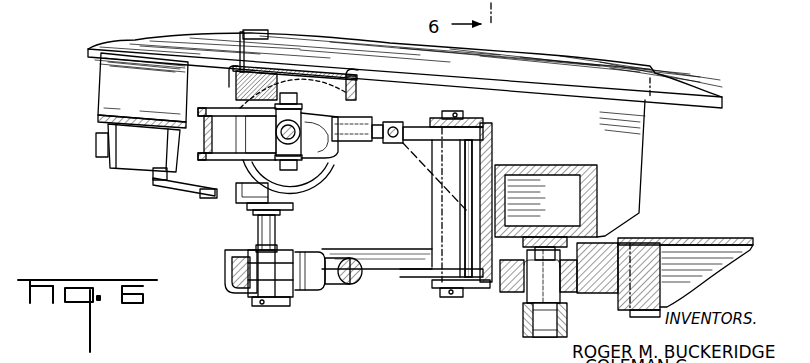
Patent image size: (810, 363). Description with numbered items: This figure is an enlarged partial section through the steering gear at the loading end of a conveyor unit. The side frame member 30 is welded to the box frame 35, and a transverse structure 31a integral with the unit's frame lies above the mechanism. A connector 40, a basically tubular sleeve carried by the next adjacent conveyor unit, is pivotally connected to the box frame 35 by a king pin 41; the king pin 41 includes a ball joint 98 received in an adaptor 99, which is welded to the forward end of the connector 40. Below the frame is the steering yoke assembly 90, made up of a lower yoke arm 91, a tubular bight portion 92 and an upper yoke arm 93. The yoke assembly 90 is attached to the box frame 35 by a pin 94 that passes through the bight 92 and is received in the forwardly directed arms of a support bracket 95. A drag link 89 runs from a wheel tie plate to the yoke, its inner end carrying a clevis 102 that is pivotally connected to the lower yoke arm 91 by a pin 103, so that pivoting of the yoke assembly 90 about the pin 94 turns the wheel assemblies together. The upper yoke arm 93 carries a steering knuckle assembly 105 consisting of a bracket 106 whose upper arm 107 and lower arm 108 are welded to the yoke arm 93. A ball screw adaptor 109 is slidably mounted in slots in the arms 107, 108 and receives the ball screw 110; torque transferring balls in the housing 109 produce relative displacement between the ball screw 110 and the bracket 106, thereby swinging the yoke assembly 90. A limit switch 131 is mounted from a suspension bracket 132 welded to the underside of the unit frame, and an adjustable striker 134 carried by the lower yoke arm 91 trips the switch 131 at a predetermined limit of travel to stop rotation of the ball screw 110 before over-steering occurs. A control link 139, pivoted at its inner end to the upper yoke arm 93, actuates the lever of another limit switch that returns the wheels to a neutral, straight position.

The side frame member 30 is at (683, 92).
The transverse structure 31a is at (336, 72).
The box frame 35 is at (567, 167).
The connector 40 is at (706, 238).
The king pin 41 is at (560, 250).
The drag link 89 is at (348, 282).
The steering yoke assembly 90 is at (371, 233).
The lower yoke arm 91 is at (418, 273).
The tubular bight portion 92 is at (472, 163).
The upper yoke arm 93 is at (422, 132).
The pin 94 is at (462, 113).
The support bracket 95 is at (493, 133).
The ball joint 98 is at (570, 290).
The adaptor 99 is at (507, 290).
The clevis 102 is at (282, 293).
The pin 103 is at (257, 298).
The steering knuckle assembly 105 is at (271, 90).
The bracket 106 is at (198, 110).
The upper arm 107 is at (220, 108).
The lower arm 108 is at (318, 187).
The ball screw adaptor 109 is at (268, 127).
The ball screw 110 is at (305, 117).
The limit switch 131 is at (147, 165).
The suspension bracket 132 is at (103, 82).
The striker 134 is at (248, 196).
The control link 139 is at (392, 148).